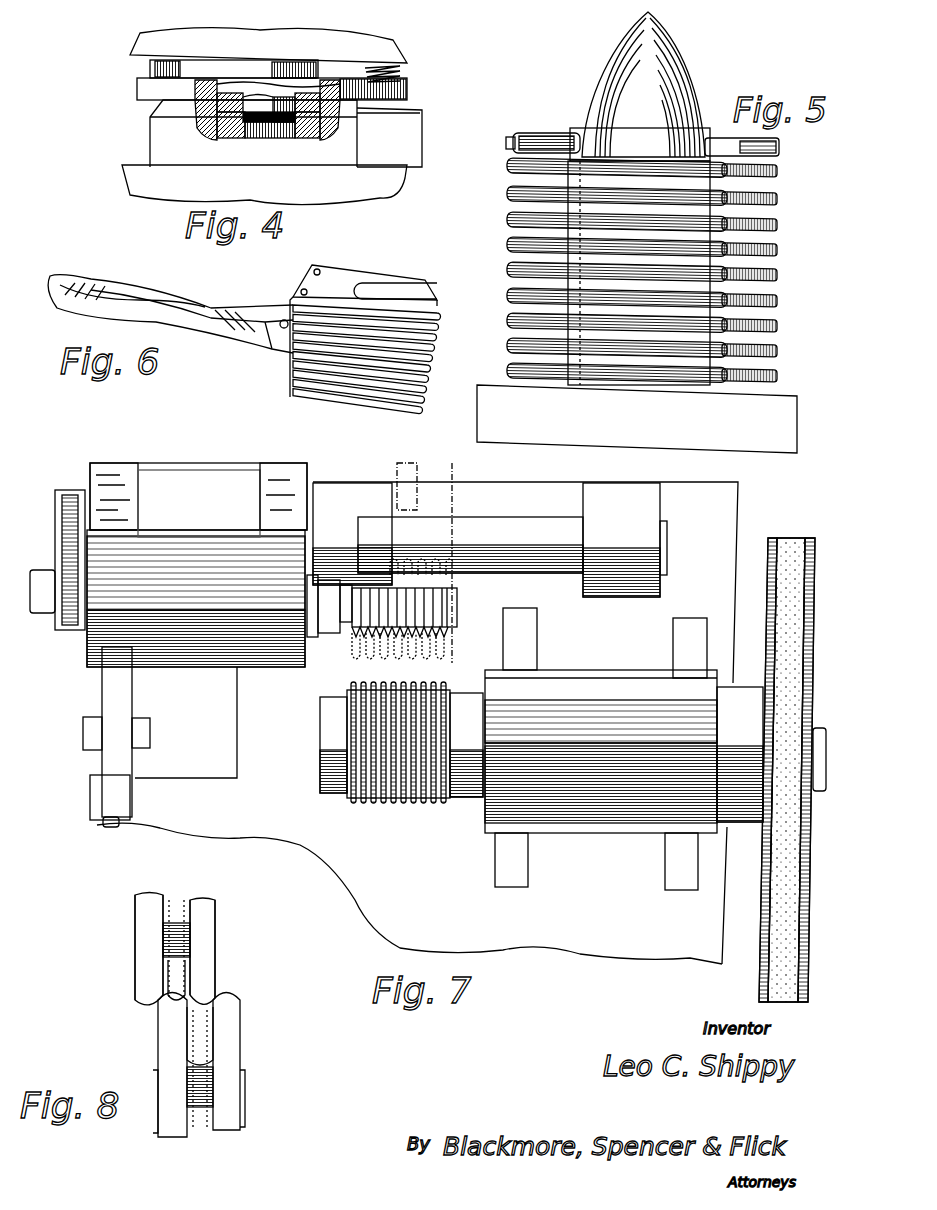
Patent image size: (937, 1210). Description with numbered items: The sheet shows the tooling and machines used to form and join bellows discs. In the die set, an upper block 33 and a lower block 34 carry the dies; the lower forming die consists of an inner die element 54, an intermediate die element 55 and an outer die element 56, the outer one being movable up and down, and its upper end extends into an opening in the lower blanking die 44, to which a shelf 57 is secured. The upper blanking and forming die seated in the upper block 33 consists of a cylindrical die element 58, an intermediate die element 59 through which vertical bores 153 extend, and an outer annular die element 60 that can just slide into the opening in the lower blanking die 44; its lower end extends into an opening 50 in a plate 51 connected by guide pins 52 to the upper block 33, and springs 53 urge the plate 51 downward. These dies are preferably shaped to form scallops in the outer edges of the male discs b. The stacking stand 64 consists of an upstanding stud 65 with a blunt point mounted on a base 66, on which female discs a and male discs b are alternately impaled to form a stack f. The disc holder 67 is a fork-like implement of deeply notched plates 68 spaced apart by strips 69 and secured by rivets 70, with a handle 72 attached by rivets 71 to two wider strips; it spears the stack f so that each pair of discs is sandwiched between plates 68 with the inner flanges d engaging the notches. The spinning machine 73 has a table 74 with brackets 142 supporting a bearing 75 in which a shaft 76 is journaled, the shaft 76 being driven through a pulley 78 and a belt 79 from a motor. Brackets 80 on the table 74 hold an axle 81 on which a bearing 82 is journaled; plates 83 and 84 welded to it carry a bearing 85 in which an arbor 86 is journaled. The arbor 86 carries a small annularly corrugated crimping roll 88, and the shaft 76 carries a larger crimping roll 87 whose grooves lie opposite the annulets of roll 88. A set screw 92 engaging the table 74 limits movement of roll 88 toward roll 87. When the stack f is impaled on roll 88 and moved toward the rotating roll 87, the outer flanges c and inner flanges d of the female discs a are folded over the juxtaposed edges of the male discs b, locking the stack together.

In FIG. 4, the upper block 33 is at (385, 52).
In FIG. 4, the lower block 34 is at (125, 168).
In FIG. 4, the lower blanking die 44 is at (155, 125).
In FIG. 4, the opening 50 is at (212, 93).
In FIG. 4, the plate 51 is at (140, 86).
In FIG. 4, the guide pins 52 is at (155, 68).
In FIG. 4, the springs 53 is at (401, 73).
In FIG. 4, the inner die element 54 is at (270, 137).
In FIG. 4, the intermediate die element 55 is at (307, 137).
In FIG. 4, the outer die element 56 is at (216, 137).
In FIG. 4, the shelf 57 is at (400, 149).
In FIG. 4, the cylindrical die element 58 is at (273, 98).
In FIG. 4, the intermediate die element 59 is at (308, 97).
In FIG. 4, the outer annular die element 60 is at (421, 113).
In FIG. 4, the vertical bores 153 is at (233, 96).
In FIG. 5, the stacking stand 64 is at (507, 401).
In FIG. 5, the upstanding stud 65 is at (688, 86).
In FIG. 5, the base 66 is at (784, 403).
In FIG. 6, the disc holder 67 is at (240, 296).
In FIG. 7, the disc holder 67 is at (417, 477).
In FIG. 6, the notched plates 68 is at (361, 338).
In FIG. 6, the strips 69 is at (294, 375).
In FIG. 6, the rivets 70 is at (307, 291).
In FIG. 6, the rivets 71 is at (281, 320).
In FIG. 6, the handle 72 is at (158, 296).
In FIG. 7, the spinning machine 73 is at (80, 801).
In FIG. 7, the table 74 is at (726, 485).
In FIG. 7, the bearing 75 is at (612, 675).
In FIG. 7, the shaft 76 is at (320, 730).
In FIG. 7, the pulley 78 is at (768, 560).
In FIG. 7, the belt 79 is at (780, 910).
In FIG. 7, the brackets 80 is at (342, 495).
In FIG. 7, the axle 81 is at (662, 500).
In FIG. 7, the bearing 82 is at (197, 480).
In FIG. 7, the plate 83 is at (123, 478).
In FIG. 7, the plate 84 is at (275, 478).
In FIG. 7, the bearing 85 is at (90, 655).
In FIG. 7, the arbor 86 is at (42, 565).
In FIG. 7, the crimping roll 87 is at (345, 795).
In FIG. 8, the crimping roll 87 is at (236, 1000).
In FIG. 7, the crimping roll 88 is at (456, 620).
In FIG. 8, the crimping roll 88 is at (200, 972).
In FIG. 7, the set screw 92 is at (105, 822).
In FIG. 7, the brackets 142 is at (675, 880).
In FIG. 5, the female disc a is at (552, 132).
In FIG. 8, the female disc a is at (185, 1037).
In FIG. 4, the male disc b is at (212, 124).
In FIG. 5, the male disc b is at (541, 152).
In FIG. 8, the male disc b is at (162, 1010).
In FIG. 5, the outer flange c is at (510, 143).
In FIG. 8, the outer flange c is at (215, 1078).
In FIG. 5, the inner flange d is at (580, 127).
In FIG. 8, the inner flange d is at (160, 946).
In FIG. 5, the stack of discs f is at (516, 218).
In FIG. 7, the stack of discs f is at (425, 560).